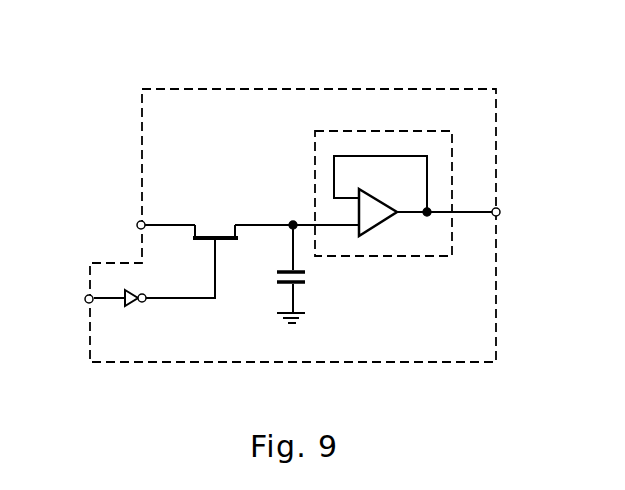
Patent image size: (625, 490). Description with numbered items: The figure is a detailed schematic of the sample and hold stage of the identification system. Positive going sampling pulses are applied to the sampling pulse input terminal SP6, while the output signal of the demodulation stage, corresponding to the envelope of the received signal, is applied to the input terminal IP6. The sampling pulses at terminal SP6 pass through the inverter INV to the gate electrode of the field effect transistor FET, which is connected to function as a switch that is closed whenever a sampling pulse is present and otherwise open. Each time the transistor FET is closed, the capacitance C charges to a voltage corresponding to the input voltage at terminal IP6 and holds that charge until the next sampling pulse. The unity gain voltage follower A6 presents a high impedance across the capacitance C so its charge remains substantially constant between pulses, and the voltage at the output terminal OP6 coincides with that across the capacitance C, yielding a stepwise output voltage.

The unity gain voltage follower A6 is at (315, 153).
The field effect transistor FET is at (205, 236).
The input terminal IP6 is at (137, 222).
The output terminal OP6 is at (500, 210).
The sampling pulse input terminal SP6 is at (85, 297).
The inverter INV is at (133, 303).
The capacitance C is at (300, 284).